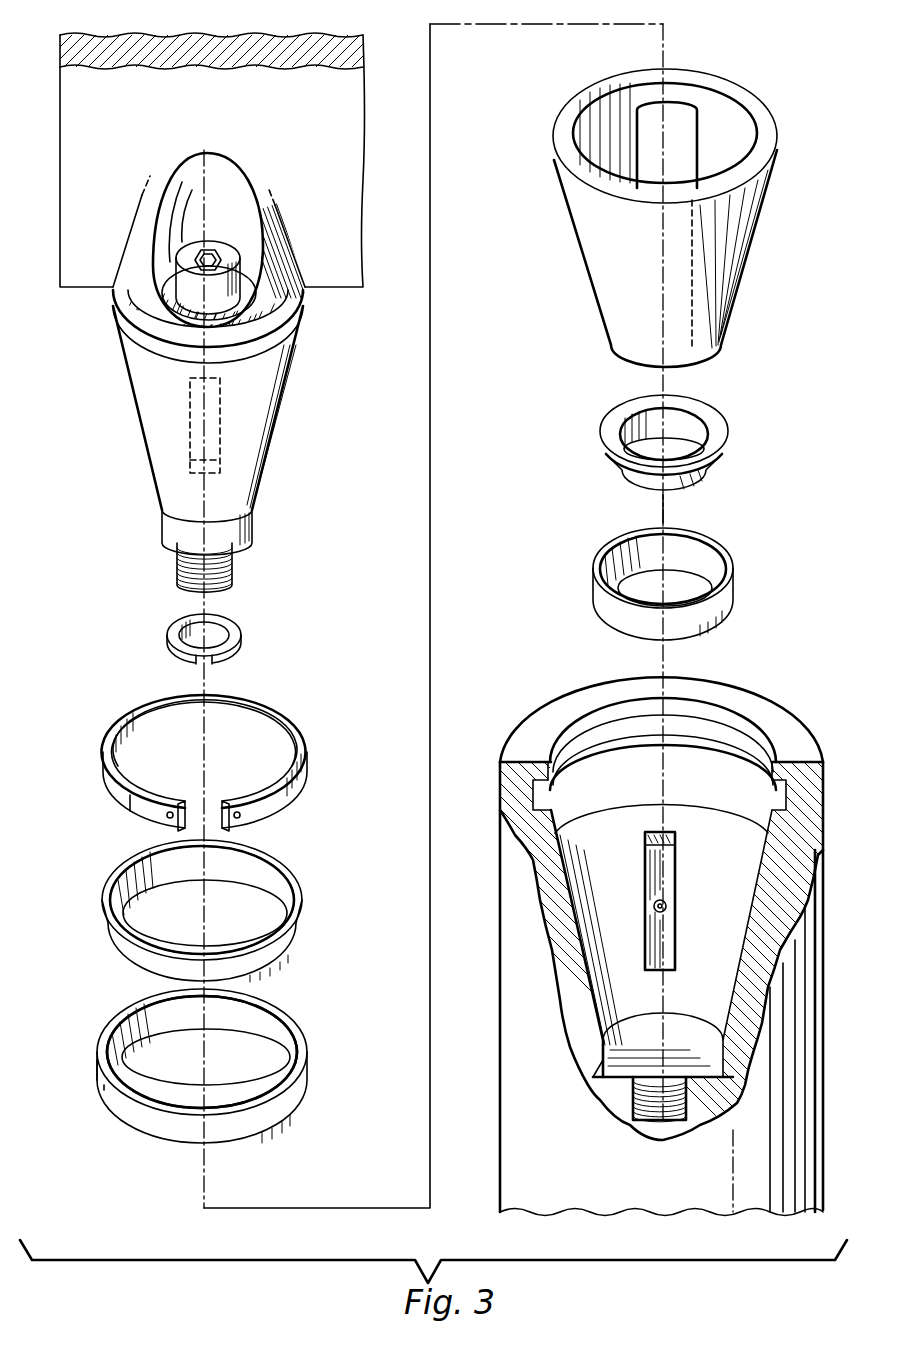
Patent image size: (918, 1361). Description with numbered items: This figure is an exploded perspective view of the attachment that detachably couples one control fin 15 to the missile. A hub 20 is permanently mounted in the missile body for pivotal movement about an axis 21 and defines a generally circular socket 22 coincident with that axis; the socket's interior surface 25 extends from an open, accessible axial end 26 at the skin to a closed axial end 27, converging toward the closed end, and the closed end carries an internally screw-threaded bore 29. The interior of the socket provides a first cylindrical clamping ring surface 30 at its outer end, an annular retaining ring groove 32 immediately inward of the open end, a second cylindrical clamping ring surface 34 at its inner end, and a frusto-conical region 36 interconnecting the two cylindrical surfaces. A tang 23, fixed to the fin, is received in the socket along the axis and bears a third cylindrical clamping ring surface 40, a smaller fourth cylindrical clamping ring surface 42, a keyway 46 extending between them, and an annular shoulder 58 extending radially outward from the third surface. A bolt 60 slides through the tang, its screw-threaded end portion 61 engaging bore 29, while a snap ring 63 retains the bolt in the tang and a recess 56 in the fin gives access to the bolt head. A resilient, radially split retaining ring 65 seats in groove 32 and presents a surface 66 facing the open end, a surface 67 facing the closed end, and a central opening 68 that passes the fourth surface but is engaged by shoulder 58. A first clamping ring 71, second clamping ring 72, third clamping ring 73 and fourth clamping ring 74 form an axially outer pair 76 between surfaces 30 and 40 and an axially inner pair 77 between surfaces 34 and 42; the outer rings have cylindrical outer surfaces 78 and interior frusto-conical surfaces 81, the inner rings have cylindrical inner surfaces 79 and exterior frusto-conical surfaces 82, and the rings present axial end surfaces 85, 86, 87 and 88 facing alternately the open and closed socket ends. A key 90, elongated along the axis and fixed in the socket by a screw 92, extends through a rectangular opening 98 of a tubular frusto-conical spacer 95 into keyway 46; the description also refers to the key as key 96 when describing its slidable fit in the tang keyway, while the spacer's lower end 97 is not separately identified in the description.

The control fin 15 is at (312, 40).
The hub 20 is at (639, 960).
The axis 21 is at (568, 24).
The socket 22 is at (639, 944).
The tang 23 is at (178, 449).
The interior surface 25 is at (738, 851).
The open axial end 26 is at (728, 698).
The closed axial end 27 is at (603, 1066).
The screw-threaded bore 29 is at (687, 1090).
The first cylindrical clamping ring surface 30 is at (732, 787).
The annular retaining ring groove 32 is at (787, 797).
The second cylindrical clamping ring surface 34 is at (683, 1034).
The frusto-conical region 36 is at (279, 396).
The third cylindrical clamping ring surface 40 is at (302, 322).
The fourth cylindrical clamping ring surface 42 is at (252, 530).
The tang keyway 46 is at (190, 396).
The recess 56 is at (245, 183).
The annular shoulder 58 is at (113, 290).
The bolt 60 is at (214, 250).
The screw-threaded end portion 61 is at (233, 570).
The snap ring 63 is at (242, 640).
The retaining ring 65 is at (203, 763).
The axially disposed surface 66 is at (302, 738).
The opposite axially disposed surface 67 is at (280, 800).
The central opening 68 is at (128, 764).
The first clamping ring 71 is at (228, 1069).
The second clamping ring 72 is at (443, 810).
The third clamping ring 73 is at (182, 905).
The fourth clamping ring 74 is at (465, 673).
The axially outer pair of clamping rings 76 is at (282, 998).
The axially inner pair of clamping rings 77 is at (628, 522).
The cylindrical outer surface 78 is at (600, 601).
The cylindrical inner surface 79 is at (700, 428).
The interior frusto-conical surface 81 is at (697, 548).
The exterior frusto-conical surface 82 is at (125, 946).
The first axial end surface 85 is at (262, 858).
The second axial end surface 86 is at (153, 1135).
The third axial end surface 87 is at (610, 428).
The fourth axial end surface 88 is at (708, 626).
The key 90 is at (678, 968).
The screw 92 is at (668, 907).
The tubular spacer 95 is at (689, 219).
The key 96 is at (625, 358).
The cup rim 97 is at (610, 85).
The rectangular opening 98 is at (690, 142).